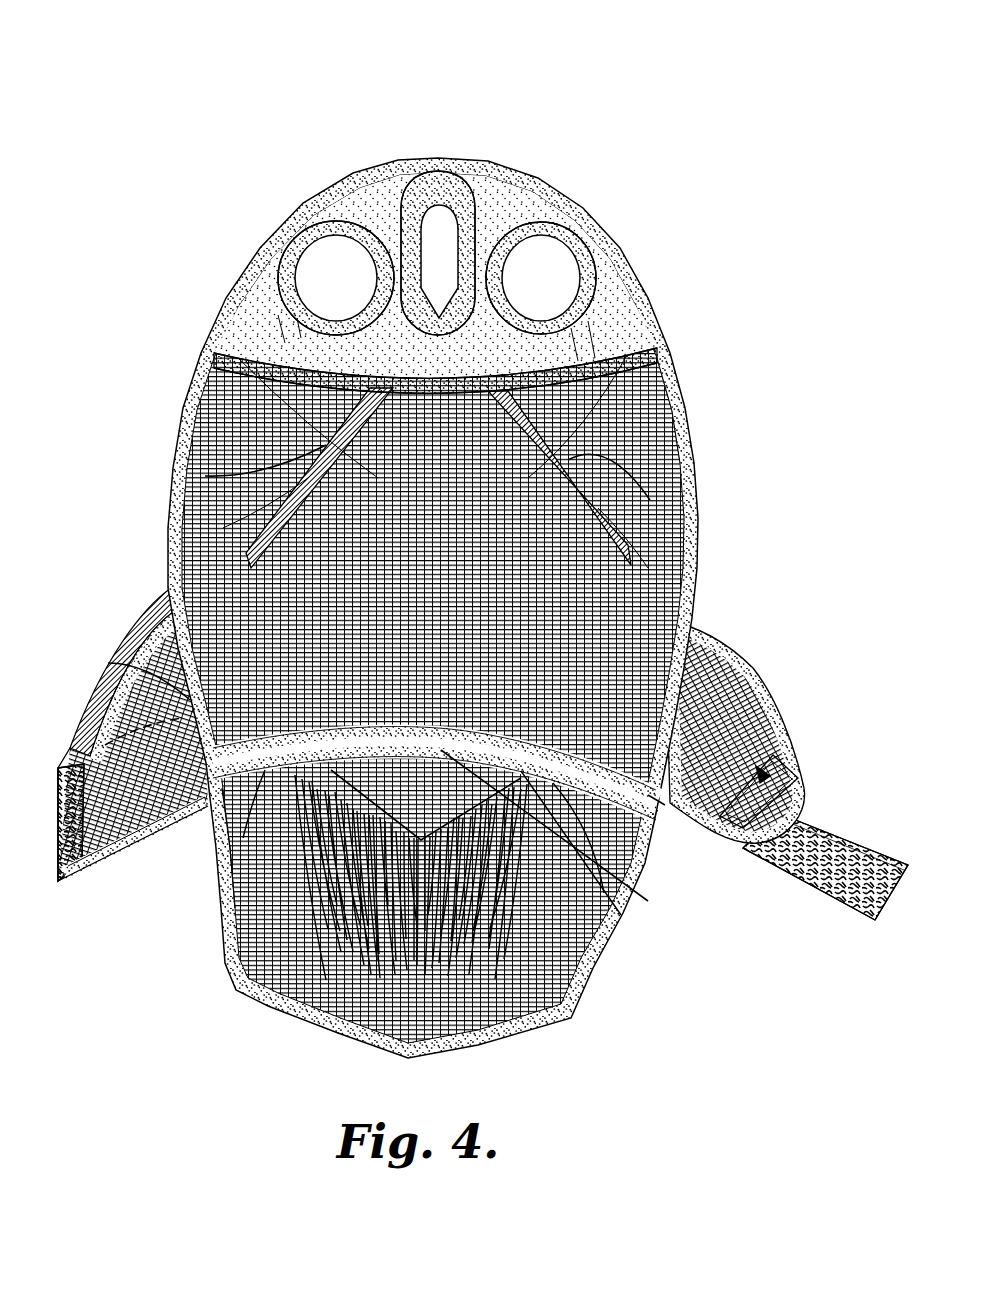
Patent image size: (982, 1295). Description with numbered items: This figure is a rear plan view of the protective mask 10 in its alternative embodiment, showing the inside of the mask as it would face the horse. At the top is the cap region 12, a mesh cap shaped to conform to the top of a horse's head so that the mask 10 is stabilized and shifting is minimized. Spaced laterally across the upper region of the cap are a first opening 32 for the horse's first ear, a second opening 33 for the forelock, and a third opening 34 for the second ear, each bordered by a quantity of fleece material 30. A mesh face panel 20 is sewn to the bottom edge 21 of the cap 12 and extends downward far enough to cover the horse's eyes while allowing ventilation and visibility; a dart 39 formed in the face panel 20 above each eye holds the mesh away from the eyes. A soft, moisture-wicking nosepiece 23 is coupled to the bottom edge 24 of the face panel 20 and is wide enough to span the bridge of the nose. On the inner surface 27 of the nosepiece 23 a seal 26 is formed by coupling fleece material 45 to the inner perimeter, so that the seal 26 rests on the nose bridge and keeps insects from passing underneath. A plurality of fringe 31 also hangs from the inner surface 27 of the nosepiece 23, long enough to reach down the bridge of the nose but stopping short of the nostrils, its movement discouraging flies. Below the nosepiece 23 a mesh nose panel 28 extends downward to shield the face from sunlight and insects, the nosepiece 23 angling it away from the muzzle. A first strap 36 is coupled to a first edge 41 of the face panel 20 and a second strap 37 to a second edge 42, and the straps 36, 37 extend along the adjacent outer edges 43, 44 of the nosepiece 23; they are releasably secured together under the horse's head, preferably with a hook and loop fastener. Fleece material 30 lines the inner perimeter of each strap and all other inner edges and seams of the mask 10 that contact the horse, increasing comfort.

The protective mask 10 is at (478, 555).
The cap region 12 is at (365, 185).
The face panel 20 is at (645, 575).
The bottom edge 21 is at (668, 412).
The nosepiece 23 is at (645, 805).
The bottom edge 24 is at (155, 680).
The seal 26 is at (628, 862).
The inner surface 27 is at (612, 902).
The nose panel 28 is at (577, 960).
The fleece material 30 is at (310, 192).
The fringe 31 is at (363, 967).
The first opening 32 is at (305, 250).
The second opening 33 is at (433, 215).
The third opening 34 is at (545, 247).
The first strap 36 is at (70, 740).
The second strap 37 is at (758, 690).
The dart 39 is at (200, 470).
The first edge 41 is at (110, 655).
The second edge 42 is at (685, 658).
The outer edge 43 is at (173, 817).
The outer edge 44 is at (653, 793).
The fleece material 45 is at (205, 852).